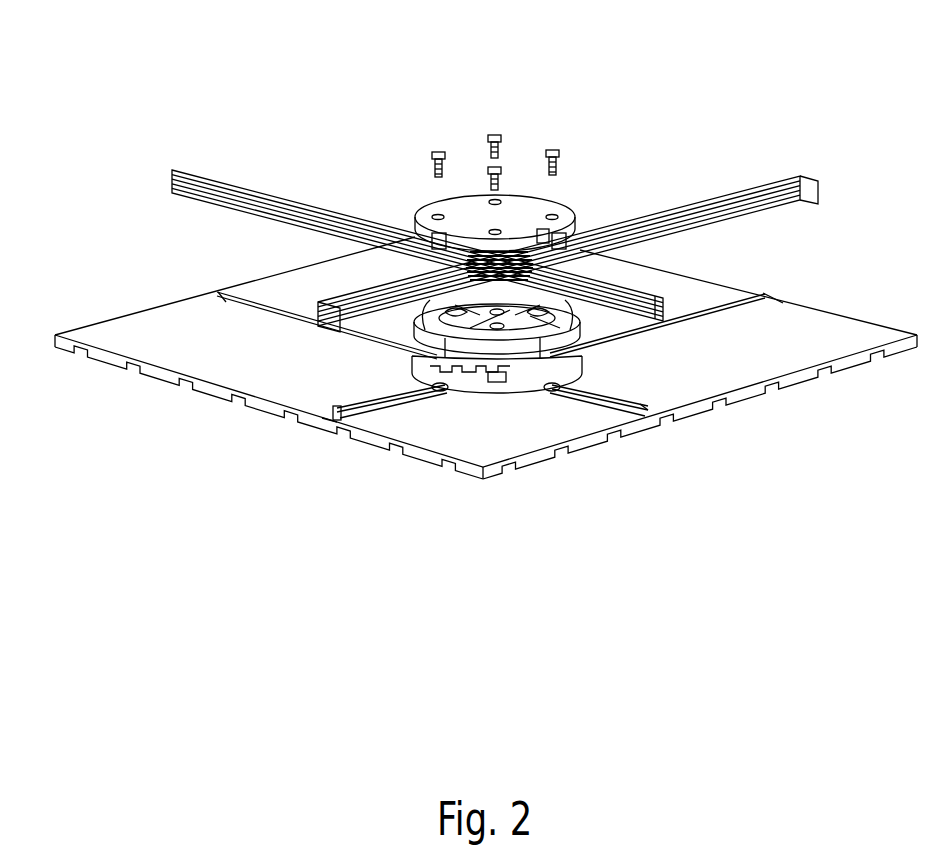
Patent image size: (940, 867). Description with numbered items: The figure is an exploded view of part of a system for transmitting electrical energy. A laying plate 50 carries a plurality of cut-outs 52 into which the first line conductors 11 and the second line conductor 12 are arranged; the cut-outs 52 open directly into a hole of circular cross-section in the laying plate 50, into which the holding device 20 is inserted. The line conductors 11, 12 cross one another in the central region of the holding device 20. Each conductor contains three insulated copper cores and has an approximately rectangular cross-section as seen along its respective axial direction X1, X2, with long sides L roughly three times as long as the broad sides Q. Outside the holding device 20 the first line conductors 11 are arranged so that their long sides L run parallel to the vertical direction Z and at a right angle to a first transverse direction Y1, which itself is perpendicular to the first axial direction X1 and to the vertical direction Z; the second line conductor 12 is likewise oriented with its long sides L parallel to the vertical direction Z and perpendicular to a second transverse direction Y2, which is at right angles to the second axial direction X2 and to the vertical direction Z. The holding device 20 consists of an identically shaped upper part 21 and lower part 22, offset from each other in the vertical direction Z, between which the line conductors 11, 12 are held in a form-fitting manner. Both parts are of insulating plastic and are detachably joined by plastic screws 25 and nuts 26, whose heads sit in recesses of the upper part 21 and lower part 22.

The first line conductor 11 is at (797, 176).
The second line conductor 12 is at (200, 180).
The holding device 20 is at (350, 128).
The upper part 21 is at (565, 216).
The lower part 22 is at (585, 342).
The screws 25 is at (488, 168).
The nuts 26 is at (440, 388).
The laying plate 50 is at (183, 345).
The cut-outs 52 is at (218, 292).
The long sides L is at (305, 318).
The broad sides Q is at (322, 323).
The first axial direction X1 is at (345, 275).
The first transverse direction Y1 is at (340, 268).
The second axial direction X2 is at (628, 285).
The second transverse direction Y2 is at (612, 278).
The vertical direction Z is at (487, 625).